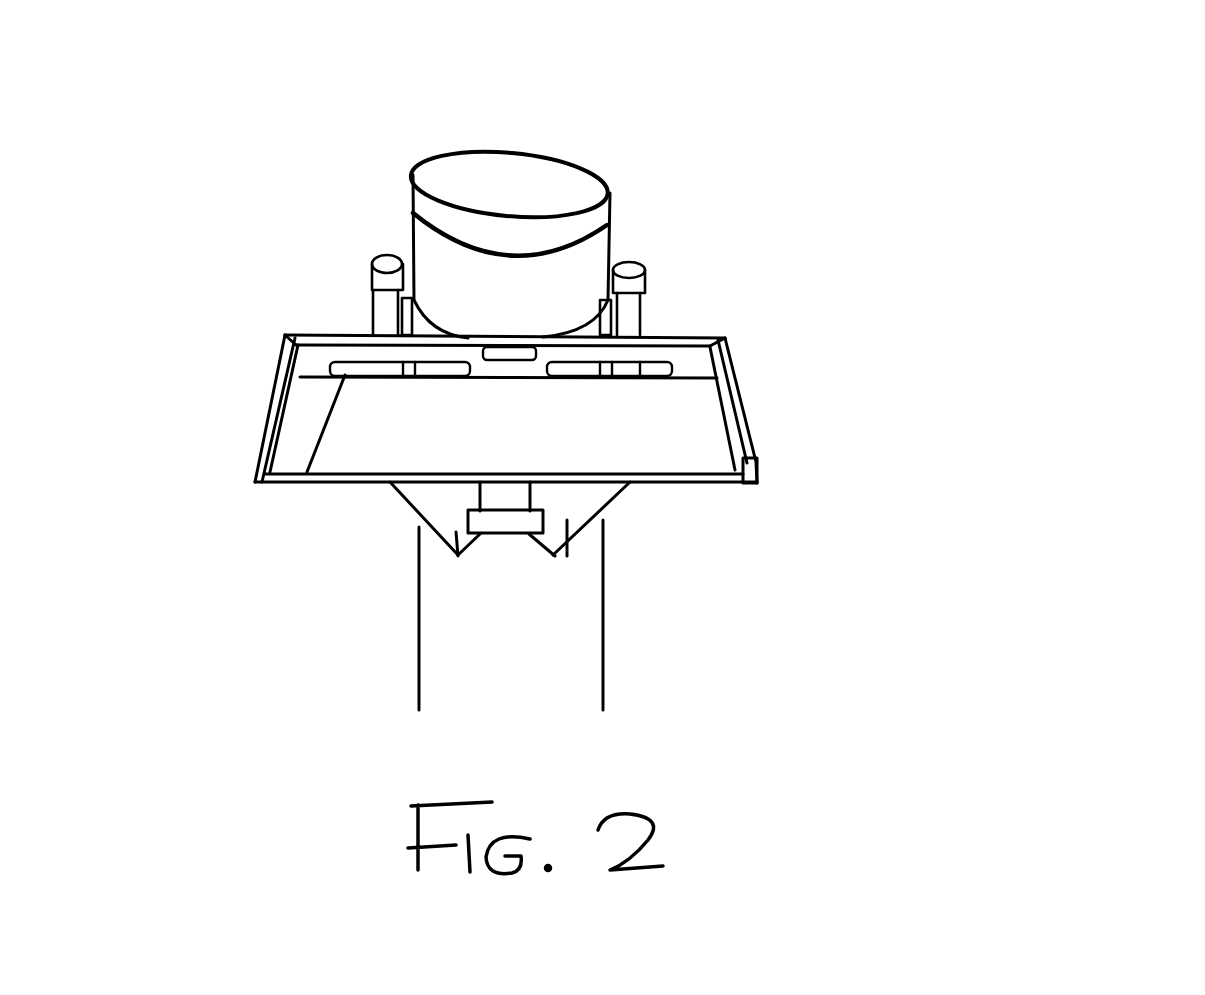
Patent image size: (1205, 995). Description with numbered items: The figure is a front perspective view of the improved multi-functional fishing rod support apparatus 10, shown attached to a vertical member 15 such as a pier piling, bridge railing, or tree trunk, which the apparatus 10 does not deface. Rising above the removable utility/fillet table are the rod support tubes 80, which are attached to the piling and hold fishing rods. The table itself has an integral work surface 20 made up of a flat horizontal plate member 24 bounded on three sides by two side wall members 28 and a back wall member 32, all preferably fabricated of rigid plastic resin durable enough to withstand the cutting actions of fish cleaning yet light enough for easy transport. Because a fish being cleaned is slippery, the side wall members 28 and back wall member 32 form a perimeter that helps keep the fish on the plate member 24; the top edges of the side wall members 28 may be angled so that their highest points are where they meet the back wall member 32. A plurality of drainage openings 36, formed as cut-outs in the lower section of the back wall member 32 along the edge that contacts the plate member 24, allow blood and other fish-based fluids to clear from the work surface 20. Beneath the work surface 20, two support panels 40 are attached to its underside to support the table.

The fishing rod support apparatus 10 is at (905, 349).
The vertical member 15 is at (508, 188).
The work surface 20 is at (695, 483).
The horizontal plate member 24 is at (543, 448).
The side wall members 28 is at (258, 423).
The back wall member 32 is at (323, 333).
The drainage openings 36 is at (673, 362).
The support panels 40 is at (565, 553).
The rod support tubes 80 is at (370, 263).